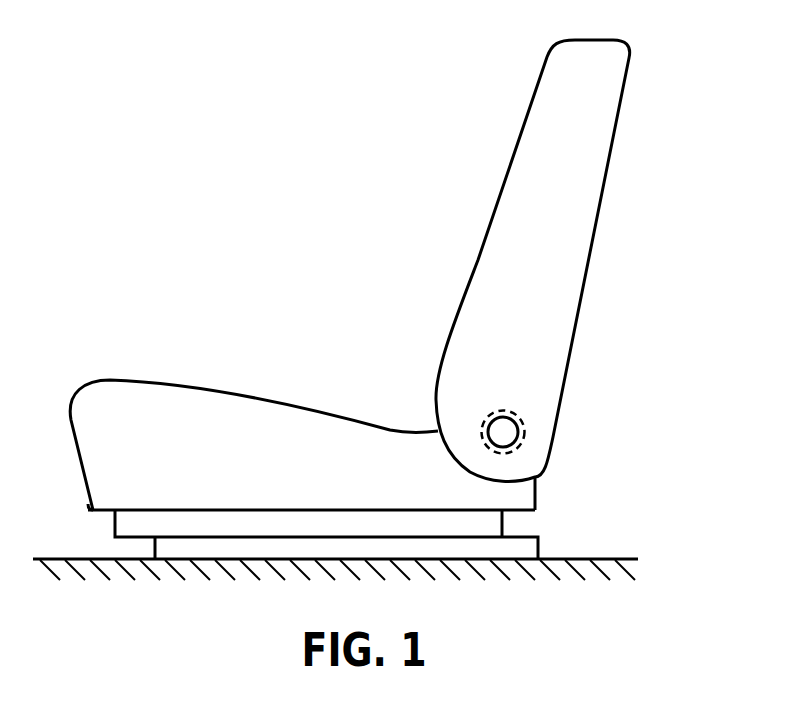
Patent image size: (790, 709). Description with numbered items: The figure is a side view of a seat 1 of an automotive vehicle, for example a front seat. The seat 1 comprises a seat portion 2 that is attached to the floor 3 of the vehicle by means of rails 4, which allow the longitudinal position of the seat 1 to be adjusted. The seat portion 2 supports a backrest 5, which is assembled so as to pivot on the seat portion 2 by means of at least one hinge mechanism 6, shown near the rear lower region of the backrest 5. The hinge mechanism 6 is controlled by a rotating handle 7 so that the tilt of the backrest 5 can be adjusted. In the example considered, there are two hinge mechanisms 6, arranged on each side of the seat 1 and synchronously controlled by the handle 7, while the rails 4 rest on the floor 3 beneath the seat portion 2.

The seat 1 is at (360, 296).
The seat portion 2 is at (155, 395).
The vehicle floor 3 is at (622, 558).
The rails 4 is at (567, 523).
The backrest 5 is at (595, 160).
The hinge mechanism 6 is at (527, 423).
The rotating handle 7 is at (513, 433).